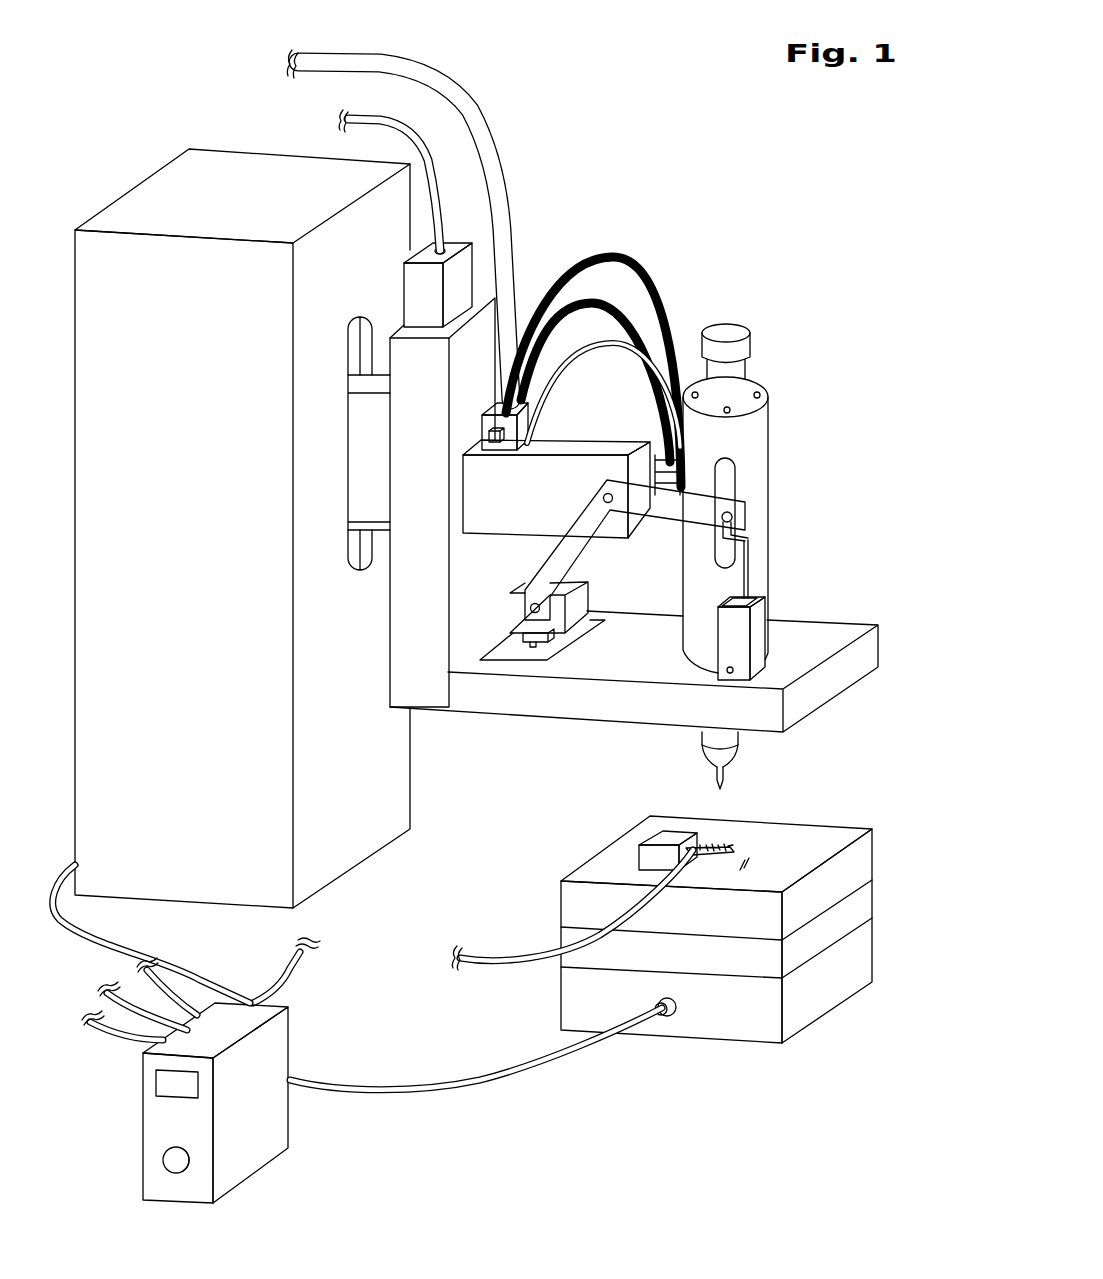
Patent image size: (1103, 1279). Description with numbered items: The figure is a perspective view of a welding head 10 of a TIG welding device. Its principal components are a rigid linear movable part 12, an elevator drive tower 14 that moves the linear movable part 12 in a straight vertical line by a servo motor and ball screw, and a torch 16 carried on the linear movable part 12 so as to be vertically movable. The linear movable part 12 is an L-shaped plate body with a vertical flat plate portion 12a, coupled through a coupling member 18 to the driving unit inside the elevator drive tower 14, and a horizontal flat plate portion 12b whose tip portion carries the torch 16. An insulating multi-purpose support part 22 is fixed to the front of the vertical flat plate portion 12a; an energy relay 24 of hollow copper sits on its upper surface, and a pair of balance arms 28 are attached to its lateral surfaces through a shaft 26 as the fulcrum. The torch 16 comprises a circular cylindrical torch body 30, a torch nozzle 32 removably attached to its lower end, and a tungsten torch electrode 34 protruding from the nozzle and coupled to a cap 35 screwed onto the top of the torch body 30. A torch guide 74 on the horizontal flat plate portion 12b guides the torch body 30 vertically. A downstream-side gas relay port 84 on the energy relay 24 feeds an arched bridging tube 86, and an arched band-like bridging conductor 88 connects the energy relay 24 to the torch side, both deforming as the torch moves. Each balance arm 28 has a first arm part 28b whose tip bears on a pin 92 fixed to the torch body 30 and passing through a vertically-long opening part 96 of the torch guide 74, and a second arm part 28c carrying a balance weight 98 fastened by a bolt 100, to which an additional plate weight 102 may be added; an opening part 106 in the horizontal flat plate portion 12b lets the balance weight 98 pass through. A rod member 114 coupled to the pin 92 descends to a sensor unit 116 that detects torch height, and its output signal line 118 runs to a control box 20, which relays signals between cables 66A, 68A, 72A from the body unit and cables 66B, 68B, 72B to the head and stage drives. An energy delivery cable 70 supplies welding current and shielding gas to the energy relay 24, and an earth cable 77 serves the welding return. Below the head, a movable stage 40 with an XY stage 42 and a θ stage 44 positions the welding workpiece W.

The welding head 10 is at (768, 167).
The linear movable part 12 is at (601, 551).
The vertical flat plate portion 12a is at (417, 623).
The horizontal flat plate portion 12b is at (577, 707).
The elevator drive tower 14 is at (146, 178).
The torch 16 is at (758, 538).
The coupling member 18 is at (363, 456).
The control box 20 is at (262, 1155).
The multi-purpose support part 22 is at (488, 517).
The energy relay 24 is at (465, 404).
The shaft 26 is at (603, 495).
The balance arm 28 is at (665, 457).
The first arm part 28b is at (677, 510).
The second arm part 28c is at (613, 567).
The torch body 30 is at (732, 390).
The torch nozzle 32 is at (705, 755).
The torch electrode 34 is at (722, 780).
The cap 35 is at (727, 330).
The movable stage 40 is at (737, 944).
The XY stage 42 is at (853, 908).
The θ stage 44 is at (853, 862).
The cable 66A is at (113, 1000).
The cable 66B is at (193, 963).
The cable 68A is at (147, 973).
The cable 68B is at (380, 128).
The energy delivery cable 70 is at (473, 108).
The cable 72A is at (128, 1040).
The cable 72B is at (498, 1087).
The torch guide 74 is at (770, 482).
The earth cable 77 is at (523, 963).
The downstream-side gas relay port 84 is at (489, 438).
The bridging tube 86 is at (640, 300).
The bridging conductor 88 is at (555, 387).
The pin 92 is at (733, 518).
The opening part 96 is at (733, 477).
The balance weight 98 is at (545, 604).
The bolt 100 is at (527, 610).
The weight 102 is at (547, 637).
The opening part 106 is at (578, 633).
The rod member 114 is at (748, 562).
The sensor unit 116 is at (760, 648).
The output signal line 118 is at (679, 678).
The welding workpiece W is at (740, 852).